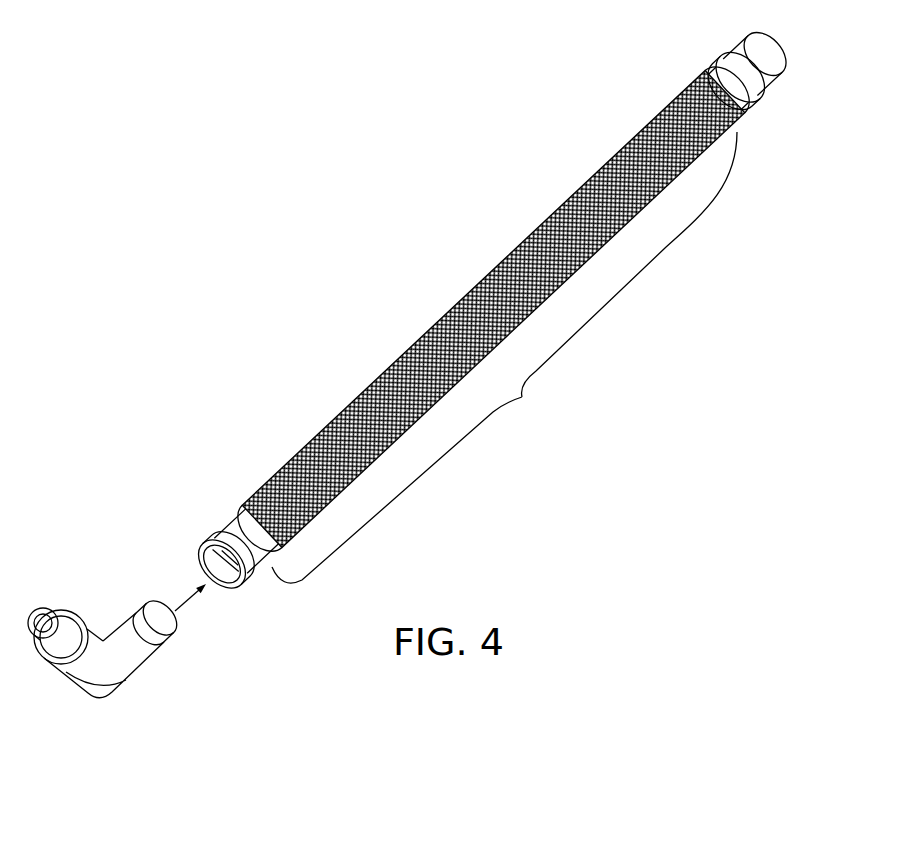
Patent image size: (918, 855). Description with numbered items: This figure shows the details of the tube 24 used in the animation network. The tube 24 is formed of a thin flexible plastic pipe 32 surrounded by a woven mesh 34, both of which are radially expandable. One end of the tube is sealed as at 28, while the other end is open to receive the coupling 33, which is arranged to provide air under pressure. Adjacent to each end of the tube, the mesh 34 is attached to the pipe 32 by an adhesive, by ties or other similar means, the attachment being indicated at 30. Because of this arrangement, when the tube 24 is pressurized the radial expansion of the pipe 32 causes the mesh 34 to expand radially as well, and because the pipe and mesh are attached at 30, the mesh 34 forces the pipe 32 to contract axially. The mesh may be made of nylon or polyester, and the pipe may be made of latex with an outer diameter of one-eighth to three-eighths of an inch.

The tube 24 is at (481, 325).
The sealed end 28 is at (783, 56).
The attachment between pipe and mesh 30 is at (215, 535).
The thin flexible plastic pipe 32 is at (226, 585).
The coupling 33 is at (107, 703).
The woven mesh 34 is at (395, 363).